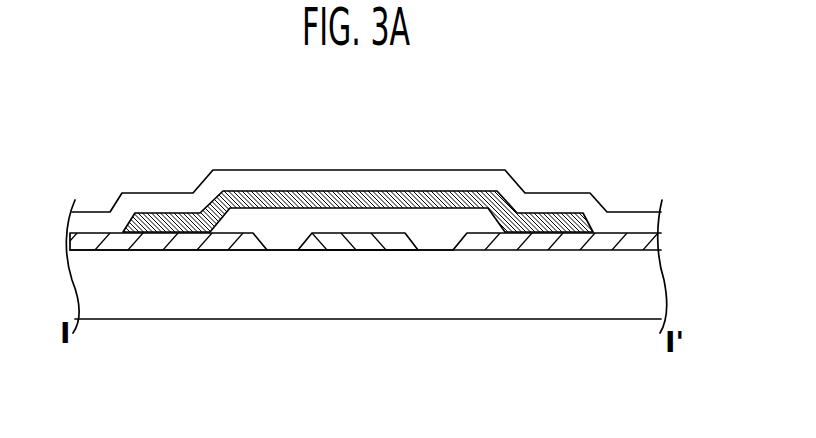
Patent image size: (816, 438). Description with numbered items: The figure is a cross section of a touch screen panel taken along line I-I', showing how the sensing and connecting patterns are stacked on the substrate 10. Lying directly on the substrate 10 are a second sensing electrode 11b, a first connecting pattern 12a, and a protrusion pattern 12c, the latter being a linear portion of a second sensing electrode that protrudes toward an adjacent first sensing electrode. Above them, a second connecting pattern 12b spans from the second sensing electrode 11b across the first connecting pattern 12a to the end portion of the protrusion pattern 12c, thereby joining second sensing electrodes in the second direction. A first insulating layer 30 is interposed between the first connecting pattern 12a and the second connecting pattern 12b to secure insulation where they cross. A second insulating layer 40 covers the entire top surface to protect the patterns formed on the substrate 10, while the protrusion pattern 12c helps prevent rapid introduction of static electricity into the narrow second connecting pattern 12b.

The substrate 10 is at (653, 285).
The second sensing electrode 11b is at (163, 238).
The first connecting pattern 12a is at (365, 238).
The second connecting pattern 12b is at (357, 193).
The protrusion pattern 12c is at (493, 238).
The first insulating layer 30 is at (435, 225).
The second insulating layer 40 is at (653, 219).